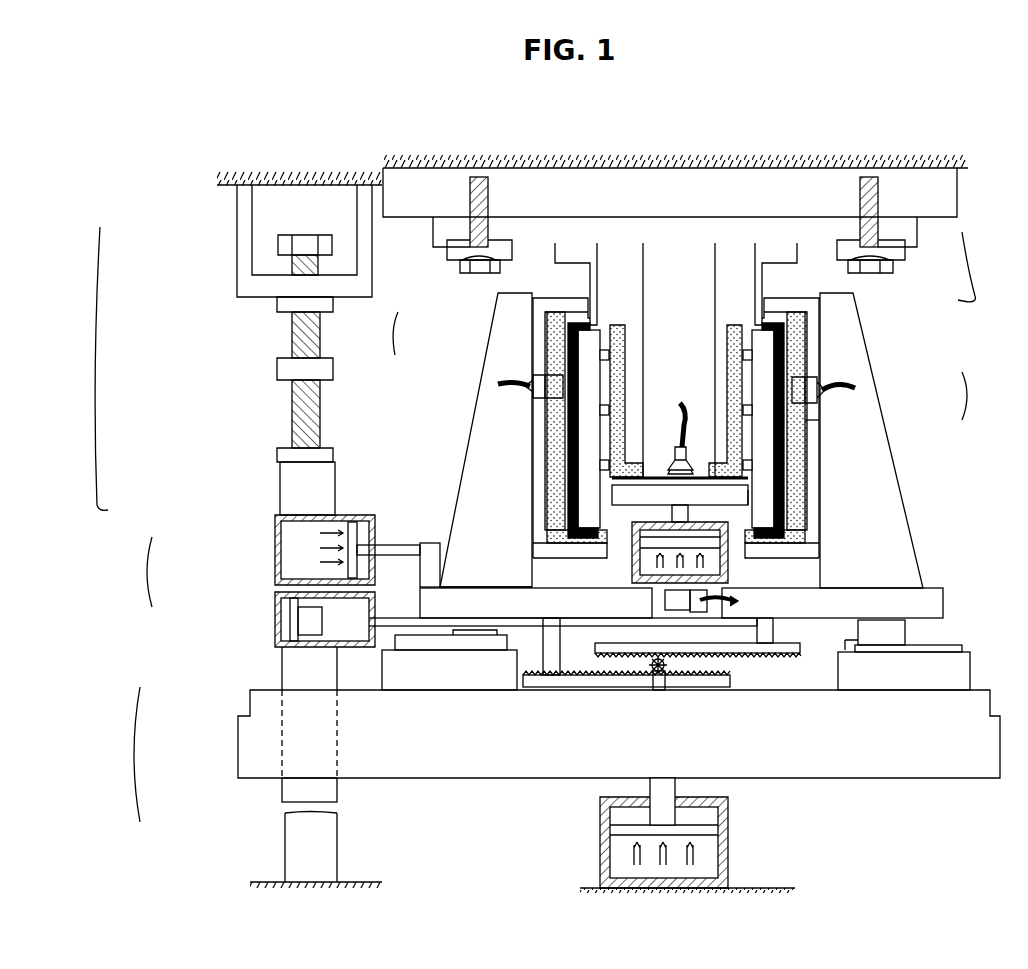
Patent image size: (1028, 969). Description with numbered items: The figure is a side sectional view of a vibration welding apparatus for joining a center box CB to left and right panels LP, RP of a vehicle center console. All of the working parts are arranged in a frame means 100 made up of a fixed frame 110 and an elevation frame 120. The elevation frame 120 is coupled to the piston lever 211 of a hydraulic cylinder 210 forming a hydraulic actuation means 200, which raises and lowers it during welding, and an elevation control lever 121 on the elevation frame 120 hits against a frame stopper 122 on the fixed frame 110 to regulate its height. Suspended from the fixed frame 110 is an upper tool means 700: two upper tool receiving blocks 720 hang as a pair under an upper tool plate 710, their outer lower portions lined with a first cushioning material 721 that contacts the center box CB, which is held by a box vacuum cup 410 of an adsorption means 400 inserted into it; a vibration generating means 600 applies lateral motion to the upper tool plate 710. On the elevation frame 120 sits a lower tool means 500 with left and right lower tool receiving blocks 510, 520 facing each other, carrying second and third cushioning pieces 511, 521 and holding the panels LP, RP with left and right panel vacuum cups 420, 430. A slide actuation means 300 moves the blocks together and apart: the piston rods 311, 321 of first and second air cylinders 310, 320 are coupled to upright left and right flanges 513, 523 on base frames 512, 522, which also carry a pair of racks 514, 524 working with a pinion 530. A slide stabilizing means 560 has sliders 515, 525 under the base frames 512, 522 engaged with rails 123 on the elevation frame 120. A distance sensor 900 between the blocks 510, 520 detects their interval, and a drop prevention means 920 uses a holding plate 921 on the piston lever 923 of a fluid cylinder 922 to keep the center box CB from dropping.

The frame means 100 is at (142, 768).
The fixed frame 110 is at (260, 184).
The elevation frame 120 is at (394, 770).
The elevation control lever 121 is at (292, 408).
The frame stopper 122 is at (292, 335).
The rails 123 is at (440, 650).
The hydraulic actuation means 200 is at (592, 866).
The hydraulic cylinder 210 is at (722, 845).
The piston lever 211 is at (610, 798).
The slide actuation means 300 is at (150, 572).
The first air cylinder 310 is at (275, 546).
The piston rod 311 is at (430, 545).
The second air cylinder 320 is at (275, 618).
The piston rod 321 is at (322, 630).
The adsorption means 400 is at (980, 409).
The box vacuum cup 410 is at (675, 450).
The left panel vacuum cup 420 is at (540, 385).
The right panel vacuum cup 430 is at (822, 398).
The lower tool means 500 is at (405, 318).
The left lower tool receiving block 510 is at (505, 328).
The second cushioning piece 511 is at (548, 448).
The base frame 512 is at (573, 600).
The left flange 513 is at (435, 585).
The rack 514 is at (573, 690).
The slider 515 is at (475, 655).
The right lower tool receiving block 520 is at (850, 342).
The third cushioning piece 521 is at (800, 500).
The base frame 522 is at (930, 602).
The right flange 523 is at (773, 635).
The rack 524 is at (742, 660).
The slider 525 is at (900, 668).
The pinion 530 is at (678, 672).
The slide stabilizing means 560 is at (805, 665).
The vibration generating means 600 is at (663, 168).
The upper tool means 700 is at (990, 271).
The upper tool plate 710 is at (575, 225).
The upper tool receiving blocks 720 is at (590, 283).
The first cushioning material 721 is at (735, 335).
The distance sensor 900 is at (835, 590).
The drop prevention means 920 is at (730, 560).
The holding plate 921 is at (748, 490).
The fluid cylinder 922 is at (712, 568).
The piston lever 923 is at (672, 512).
The center box CB is at (605, 372).
The left panel LP is at (560, 478).
The right panel RP is at (815, 452).